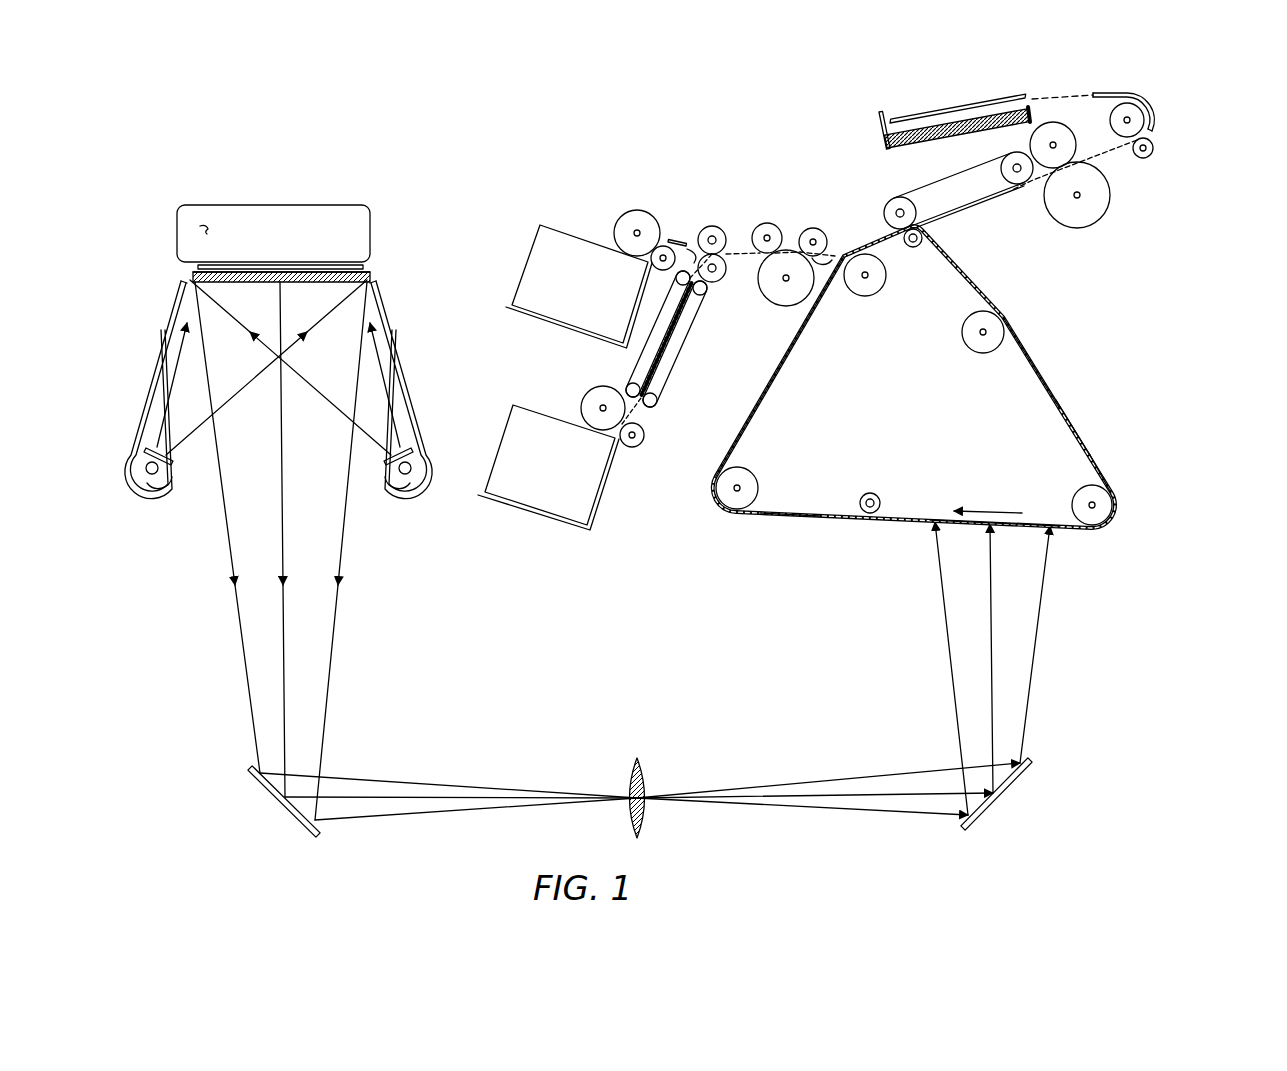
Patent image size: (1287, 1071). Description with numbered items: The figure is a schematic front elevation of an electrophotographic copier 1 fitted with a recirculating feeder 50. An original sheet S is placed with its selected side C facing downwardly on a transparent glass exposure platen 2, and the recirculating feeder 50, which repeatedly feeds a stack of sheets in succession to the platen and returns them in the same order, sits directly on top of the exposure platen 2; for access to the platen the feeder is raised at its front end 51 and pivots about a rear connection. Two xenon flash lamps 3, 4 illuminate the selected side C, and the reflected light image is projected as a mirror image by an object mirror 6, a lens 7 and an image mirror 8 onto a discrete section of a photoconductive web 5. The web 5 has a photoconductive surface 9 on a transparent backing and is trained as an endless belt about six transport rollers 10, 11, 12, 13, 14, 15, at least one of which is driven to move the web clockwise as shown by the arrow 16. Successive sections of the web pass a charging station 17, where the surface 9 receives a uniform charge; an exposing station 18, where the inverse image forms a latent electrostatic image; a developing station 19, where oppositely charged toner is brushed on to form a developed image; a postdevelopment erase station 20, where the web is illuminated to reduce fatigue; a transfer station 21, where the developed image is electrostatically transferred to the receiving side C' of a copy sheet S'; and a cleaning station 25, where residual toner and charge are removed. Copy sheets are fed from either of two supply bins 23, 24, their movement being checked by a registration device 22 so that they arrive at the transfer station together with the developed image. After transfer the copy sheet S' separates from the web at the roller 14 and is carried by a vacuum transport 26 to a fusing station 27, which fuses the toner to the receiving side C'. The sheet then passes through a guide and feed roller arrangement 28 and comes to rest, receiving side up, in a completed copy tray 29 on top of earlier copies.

The electrophotographic copier 1 is at (628, 116).
The exposure platen 2 is at (194, 273).
The xenon flash lamp 3 is at (160, 478).
The xenon flash lamp 4 is at (398, 478).
The photoconductive web 5 is at (1057, 392).
The object mirror 6 is at (258, 793).
The lens 7 is at (641, 764).
The image mirror 8 is at (993, 806).
The photoconductive surface 9 is at (1084, 419).
The transport roller 10 is at (1085, 494).
The transport roller 11 is at (875, 495).
The transport roller 12 is at (748, 490).
The transport roller 13 is at (858, 292).
The transport roller 14 is at (914, 249).
The transport roller 15 is at (976, 343).
The arrow 16 is at (975, 512).
The charging station 17 is at (1107, 476).
The exposing station 18 is at (971, 531).
The developing station 19 is at (789, 523).
The postdevelopment erase station 20 is at (755, 433).
The transfer station 21 is at (861, 236).
The registration device 22 is at (788, 236).
The supply bin 23 is at (527, 270).
The supply bin 24 is at (510, 420).
The cleaning station 25 is at (1034, 345).
The vacuum transport 26 is at (934, 178).
The fusing station 27 is at (1088, 158).
The guide and feed roller arrangement 28 is at (1163, 136).
The completed copy tray 29 is at (880, 133).
The recirculating feeder 50 is at (280, 205).
The front end 51 is at (205, 230).
The original sheet S is at (307, 248).
The selected side C is at (311, 288).
The copy sheet S' is at (968, 82).
The receiving side C' is at (957, 96).